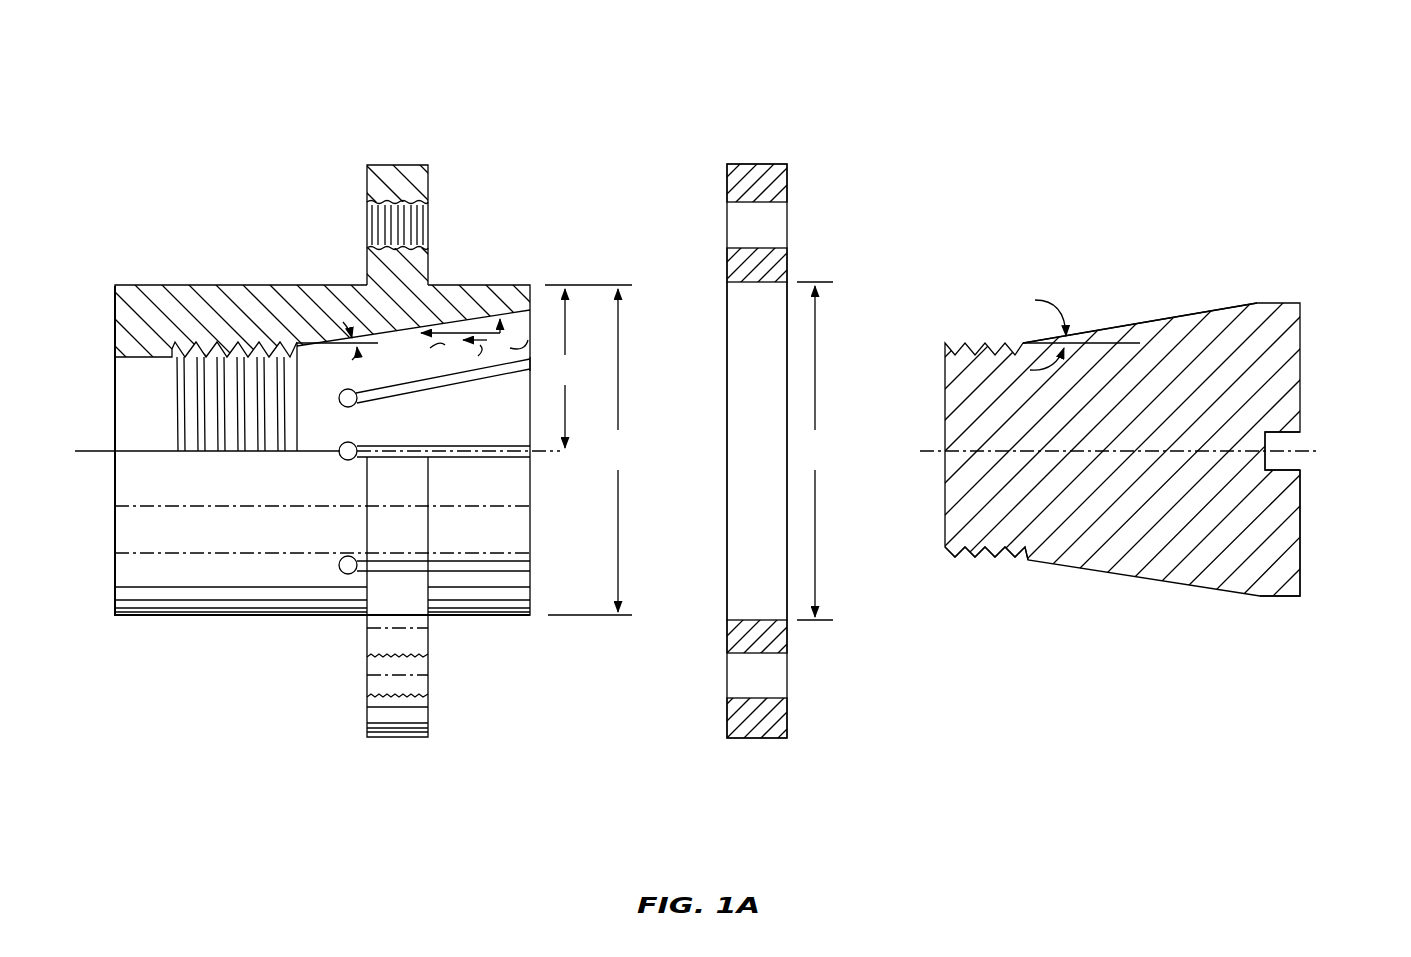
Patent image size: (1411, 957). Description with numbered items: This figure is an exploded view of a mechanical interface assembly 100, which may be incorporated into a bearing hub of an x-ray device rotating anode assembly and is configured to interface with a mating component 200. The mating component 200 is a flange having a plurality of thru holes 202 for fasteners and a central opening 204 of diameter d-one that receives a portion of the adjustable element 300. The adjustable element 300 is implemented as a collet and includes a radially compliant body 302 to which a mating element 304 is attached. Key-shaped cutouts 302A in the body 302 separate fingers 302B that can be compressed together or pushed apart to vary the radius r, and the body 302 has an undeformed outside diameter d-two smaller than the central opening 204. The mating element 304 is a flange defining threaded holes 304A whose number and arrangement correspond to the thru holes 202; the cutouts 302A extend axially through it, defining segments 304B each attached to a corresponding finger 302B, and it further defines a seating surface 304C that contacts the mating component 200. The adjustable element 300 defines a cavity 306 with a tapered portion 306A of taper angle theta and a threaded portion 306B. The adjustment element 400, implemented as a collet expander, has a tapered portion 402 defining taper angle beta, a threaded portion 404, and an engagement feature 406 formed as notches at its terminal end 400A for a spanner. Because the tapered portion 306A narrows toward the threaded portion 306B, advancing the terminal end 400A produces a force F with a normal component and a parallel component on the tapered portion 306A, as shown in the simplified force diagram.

The mechanical interface assembly 100 is at (1160, 143).
The mating component 200 is at (781, 146).
The thru holes 202 is at (757, 234).
The central opening 204 is at (757, 450).
The adjustable element 300 is at (226, 182).
The body 302 is at (490, 285).
The cutouts 302A is at (484, 447).
The fingers 302B is at (517, 521).
The mating element 304 is at (367, 183).
The threaded holes 304A is at (428, 228).
The segments 304B is at (387, 642).
The seating surface 304C is at (428, 723).
The cavity 306 is at (395, 409).
The tapered portion 306A is at (537, 300).
The threaded portion 306B is at (172, 383).
The adjustment element 400 is at (1041, 263).
The terminal end 400A is at (1300, 565).
The tapered portion 402 is at (1203, 312).
The threaded portion 404 is at (992, 556).
The engagement feature 406 is at (1290, 441).